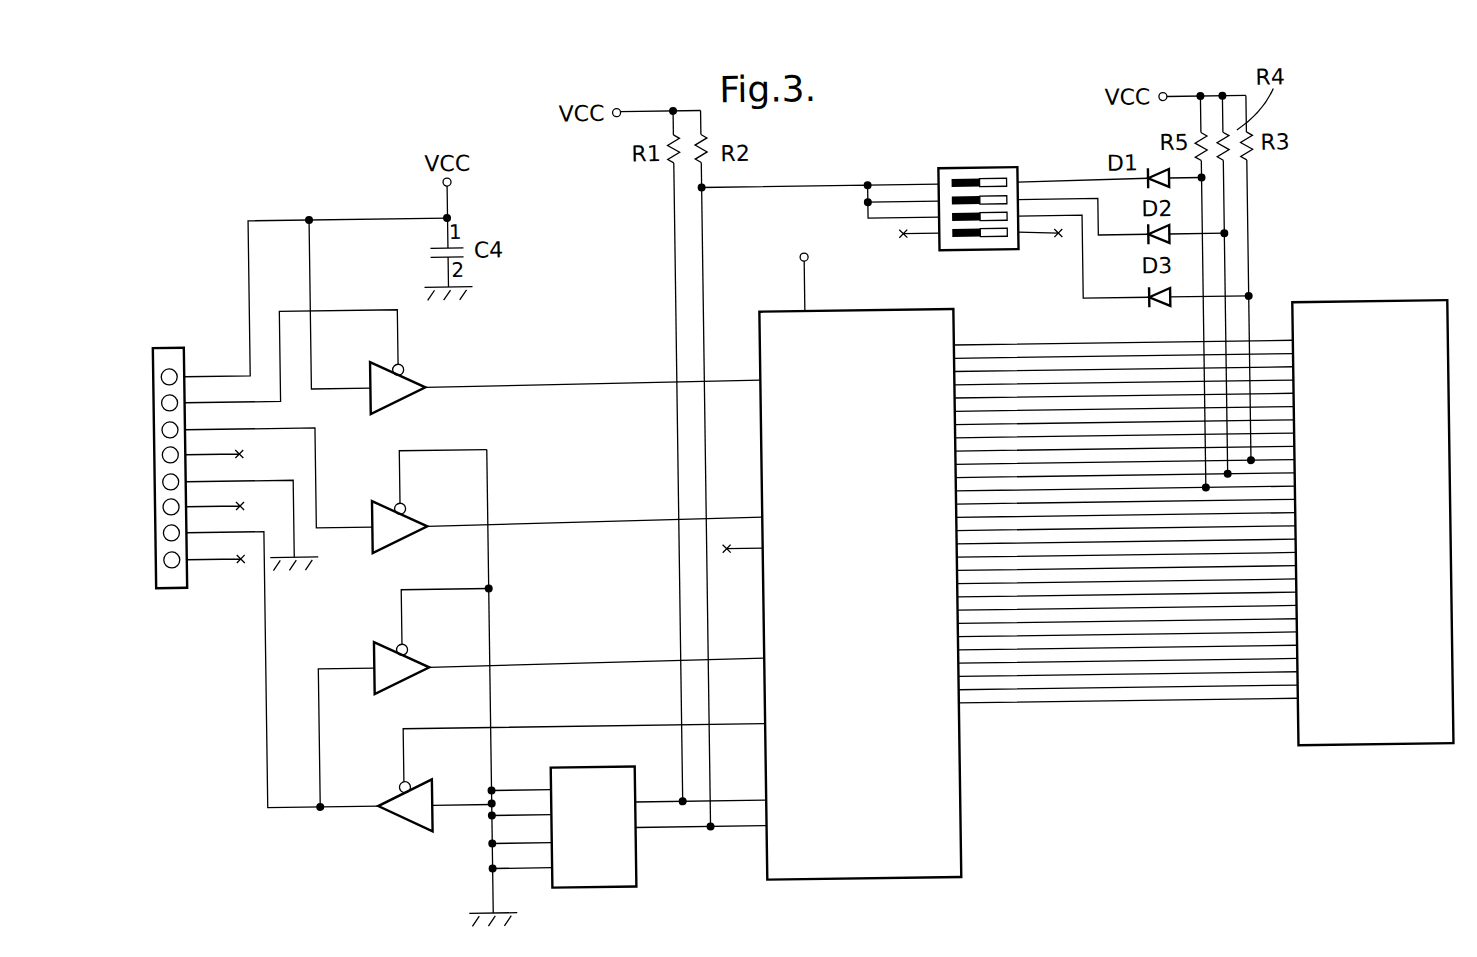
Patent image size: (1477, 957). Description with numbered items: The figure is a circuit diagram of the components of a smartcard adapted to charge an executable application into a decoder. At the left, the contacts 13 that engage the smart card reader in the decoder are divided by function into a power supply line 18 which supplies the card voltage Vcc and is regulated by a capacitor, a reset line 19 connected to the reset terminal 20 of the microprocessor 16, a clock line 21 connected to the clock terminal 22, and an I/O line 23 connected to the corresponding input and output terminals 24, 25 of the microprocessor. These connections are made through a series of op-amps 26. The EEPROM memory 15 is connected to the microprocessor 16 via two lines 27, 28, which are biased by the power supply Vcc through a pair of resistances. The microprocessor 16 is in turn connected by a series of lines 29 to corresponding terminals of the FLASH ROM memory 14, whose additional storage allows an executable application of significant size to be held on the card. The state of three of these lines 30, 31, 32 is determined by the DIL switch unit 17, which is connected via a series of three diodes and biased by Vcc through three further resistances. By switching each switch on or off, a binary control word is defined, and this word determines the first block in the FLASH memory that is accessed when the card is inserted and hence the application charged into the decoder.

The contacts 13 is at (173, 617).
The FLASH ROM memory 14 is at (1390, 306).
The EEPROM memory 15 is at (580, 885).
The microprocessor 16 is at (958, 843).
The DIL switch unit 17 is at (970, 171).
The power supply line 18 is at (202, 369).
The reset line 19 is at (296, 396).
The reset terminal 20 is at (762, 370).
The clock line 21 is at (317, 481).
The clock terminal 22 is at (762, 512).
The I/O line 23 is at (263, 753).
The input terminal 24 is at (763, 652).
The output terminal 25 is at (762, 718).
The op-amps 26 is at (400, 398).
The line 27 is at (656, 799).
The line 28 is at (660, 829).
The lines 29 is at (1100, 708).
The line 30 is at (1298, 467).
The line 31 is at (1298, 480).
The line 32 is at (1298, 492).